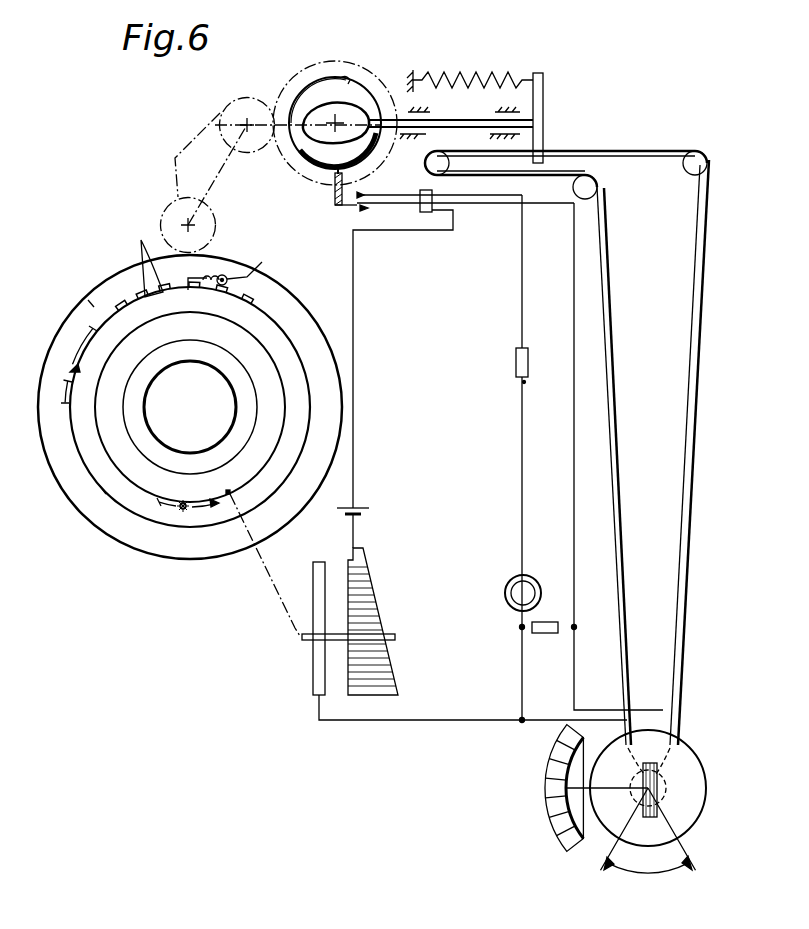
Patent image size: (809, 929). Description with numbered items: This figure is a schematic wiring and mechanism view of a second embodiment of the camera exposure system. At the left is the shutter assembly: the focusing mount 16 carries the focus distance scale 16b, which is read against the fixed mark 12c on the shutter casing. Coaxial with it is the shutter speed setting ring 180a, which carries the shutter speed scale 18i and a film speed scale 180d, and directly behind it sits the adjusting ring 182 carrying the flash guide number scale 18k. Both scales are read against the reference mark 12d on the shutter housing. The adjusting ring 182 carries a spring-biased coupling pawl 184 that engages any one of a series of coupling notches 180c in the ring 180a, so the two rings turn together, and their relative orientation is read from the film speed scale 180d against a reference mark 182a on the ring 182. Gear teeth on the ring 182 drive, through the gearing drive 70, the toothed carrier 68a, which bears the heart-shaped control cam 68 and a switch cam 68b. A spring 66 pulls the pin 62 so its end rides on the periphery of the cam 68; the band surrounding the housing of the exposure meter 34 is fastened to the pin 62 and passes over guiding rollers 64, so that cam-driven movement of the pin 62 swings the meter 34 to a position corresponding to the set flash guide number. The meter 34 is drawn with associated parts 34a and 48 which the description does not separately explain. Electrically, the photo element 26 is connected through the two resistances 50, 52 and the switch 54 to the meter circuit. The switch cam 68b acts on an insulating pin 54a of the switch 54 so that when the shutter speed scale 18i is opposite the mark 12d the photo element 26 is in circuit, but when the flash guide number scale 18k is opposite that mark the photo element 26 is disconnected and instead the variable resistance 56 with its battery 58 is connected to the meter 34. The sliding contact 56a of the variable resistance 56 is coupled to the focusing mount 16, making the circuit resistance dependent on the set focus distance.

The fixed mark 12c is at (246, 405).
The reference mark 12d is at (66, 302).
The focusing mount 16 is at (252, 362).
The focus distance scale 16b is at (270, 448).
The shutter speed scale 18i is at (163, 520).
The flash guide number scale 18k is at (92, 305).
The photo element 26 is at (505, 593).
The exposure meter 34 is at (682, 755).
The pointer 34a is at (607, 795).
The aperture scale 48 is at (546, 808).
The resistance 50 is at (545, 633).
The resistance 52 is at (514, 360).
The switch 54 is at (375, 205).
The insulating pin 54a is at (333, 193).
The variable resistance 56 is at (372, 618).
The sliding contact 56a is at (398, 639).
The battery 58 is at (366, 513).
The pin 62 is at (452, 120).
The guiding rollers 64 is at (433, 165).
The spring 66 is at (462, 72).
The control cam 68 is at (347, 113).
The carrier 68a is at (335, 72).
The switch cam 68b is at (310, 92).
The gearing drive 70 is at (260, 175).
The shutter speed setting ring 180a is at (252, 320).
The coupling notches 180c is at (141, 252).
The film speed scale 180d is at (100, 488).
The adjusting ring 182 is at (203, 556).
The reference mark 182a is at (78, 476).
The coupling pawl 184 is at (232, 281).